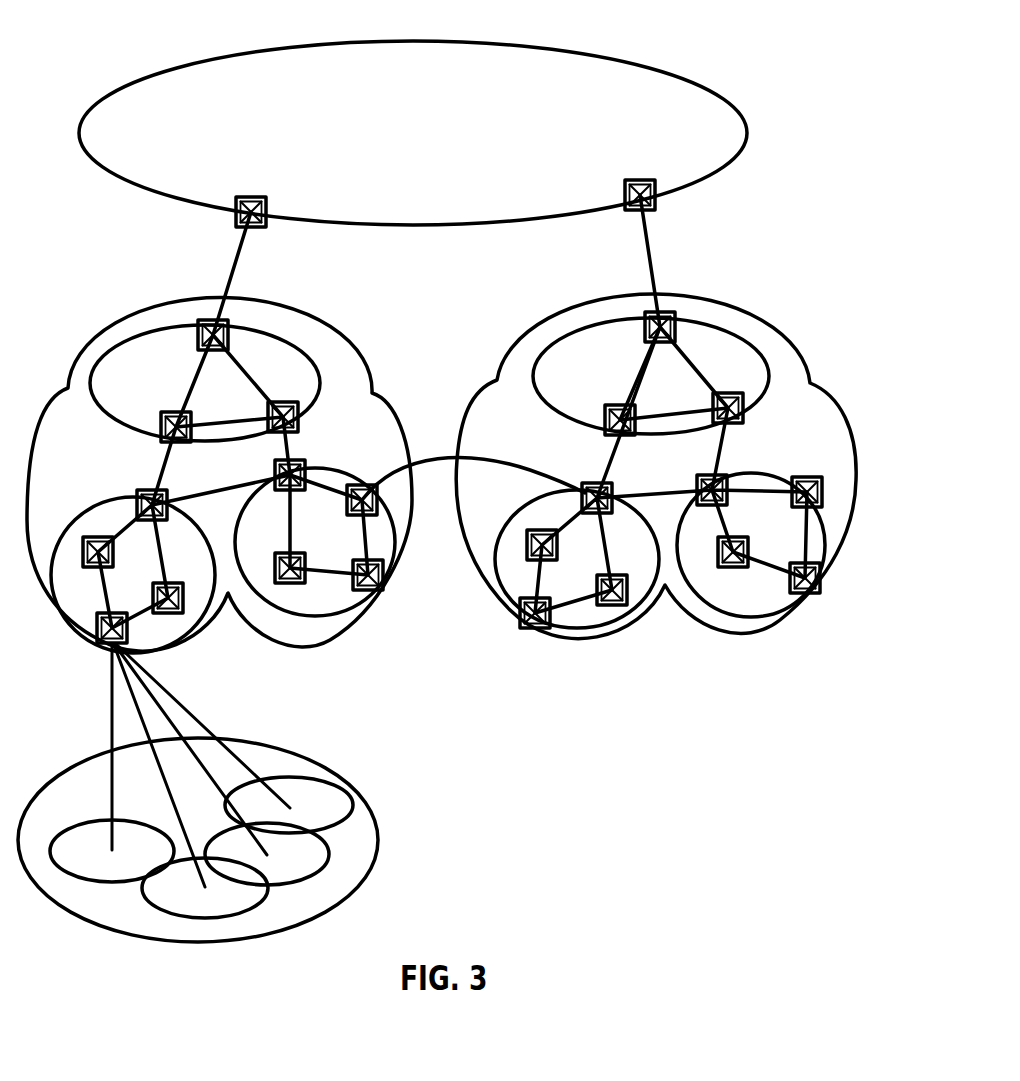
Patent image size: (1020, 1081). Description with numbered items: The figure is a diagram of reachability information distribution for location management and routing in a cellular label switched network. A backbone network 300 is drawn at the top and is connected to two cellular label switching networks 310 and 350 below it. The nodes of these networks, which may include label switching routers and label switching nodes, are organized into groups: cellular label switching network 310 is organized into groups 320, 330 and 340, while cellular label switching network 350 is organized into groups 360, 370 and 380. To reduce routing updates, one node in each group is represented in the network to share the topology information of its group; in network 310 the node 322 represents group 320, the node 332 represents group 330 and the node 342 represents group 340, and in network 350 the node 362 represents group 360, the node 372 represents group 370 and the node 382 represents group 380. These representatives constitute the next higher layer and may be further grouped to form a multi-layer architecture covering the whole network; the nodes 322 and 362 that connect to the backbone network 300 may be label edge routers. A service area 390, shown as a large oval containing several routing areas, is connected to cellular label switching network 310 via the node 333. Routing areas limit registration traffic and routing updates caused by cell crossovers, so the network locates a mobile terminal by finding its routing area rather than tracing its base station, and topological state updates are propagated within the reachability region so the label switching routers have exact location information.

The backbone network 300 is at (600, 52).
The cellular label switching network 310 is at (338, 330).
The group 320 is at (127, 340).
The node 322 is at (202, 318).
The group 330 is at (203, 620).
The node 332 is at (140, 495).
The node 333 is at (100, 650).
The group 340 is at (315, 615).
The node 342 is at (302, 467).
The cellular label switching network 350 is at (555, 298).
The group 360 is at (752, 343).
The node 362 is at (672, 318).
The group 370 is at (572, 638).
The node 372 is at (528, 538).
The group 380 is at (753, 620).
The node 382 is at (703, 505).
The service area 390 is at (373, 818).